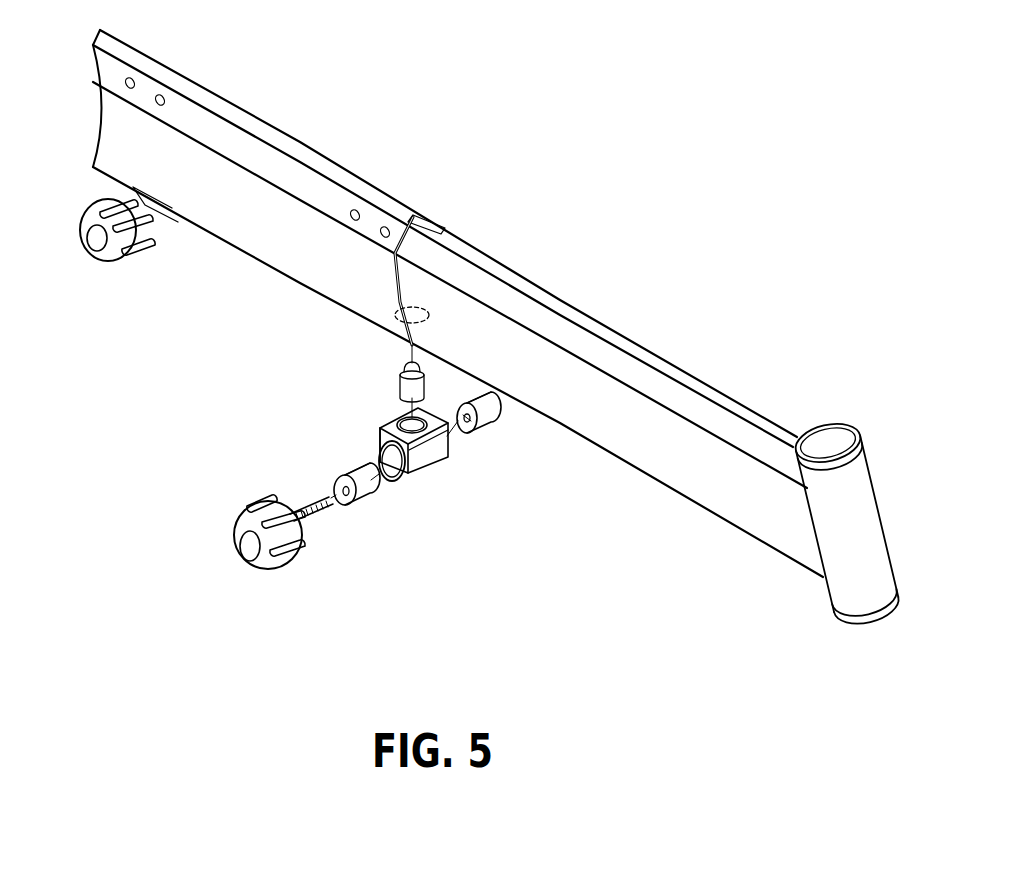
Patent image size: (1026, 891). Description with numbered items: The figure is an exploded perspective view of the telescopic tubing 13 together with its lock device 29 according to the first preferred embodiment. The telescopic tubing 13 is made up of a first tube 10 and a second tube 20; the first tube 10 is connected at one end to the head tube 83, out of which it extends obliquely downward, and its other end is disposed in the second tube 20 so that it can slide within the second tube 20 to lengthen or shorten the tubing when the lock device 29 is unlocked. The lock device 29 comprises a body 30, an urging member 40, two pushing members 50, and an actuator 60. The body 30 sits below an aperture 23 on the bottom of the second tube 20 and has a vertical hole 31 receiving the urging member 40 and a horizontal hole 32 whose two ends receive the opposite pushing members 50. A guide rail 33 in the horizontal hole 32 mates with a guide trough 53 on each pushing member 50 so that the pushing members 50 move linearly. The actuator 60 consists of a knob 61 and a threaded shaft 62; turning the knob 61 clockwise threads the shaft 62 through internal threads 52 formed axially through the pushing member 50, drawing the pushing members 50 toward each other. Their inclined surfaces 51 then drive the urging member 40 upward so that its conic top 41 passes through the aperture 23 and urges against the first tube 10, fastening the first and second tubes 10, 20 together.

The first tube 10 is at (614, 338).
The telescopic tubing 13 is at (458, 303).
The second tube 20 is at (223, 108).
The aperture 23 is at (398, 312).
The lock device 29 is at (96, 198).
The body 30 is at (399, 461).
The vertical hole 31 is at (406, 420).
The horizontal hole 32 is at (380, 452).
The guide rail 33 is at (390, 481).
The urging member 40 is at (400, 386).
The conic top 41 is at (405, 368).
The pushing member 50 is at (432, 468).
The inclined surface 51 is at (466, 411).
The internal threads 52 is at (464, 426).
The guide trough 53 is at (471, 426).
The actuator 60 is at (245, 562).
The knob 61 is at (240, 524).
The threaded shaft 62 is at (296, 486).
The head tube 83 is at (837, 558).